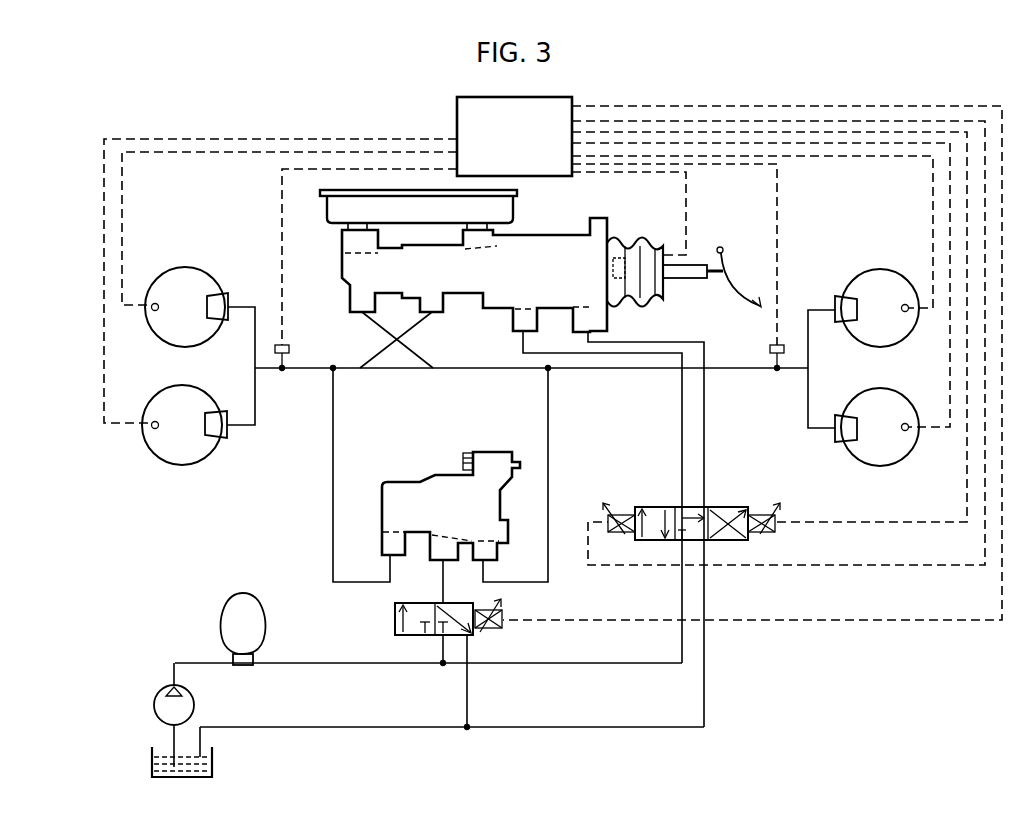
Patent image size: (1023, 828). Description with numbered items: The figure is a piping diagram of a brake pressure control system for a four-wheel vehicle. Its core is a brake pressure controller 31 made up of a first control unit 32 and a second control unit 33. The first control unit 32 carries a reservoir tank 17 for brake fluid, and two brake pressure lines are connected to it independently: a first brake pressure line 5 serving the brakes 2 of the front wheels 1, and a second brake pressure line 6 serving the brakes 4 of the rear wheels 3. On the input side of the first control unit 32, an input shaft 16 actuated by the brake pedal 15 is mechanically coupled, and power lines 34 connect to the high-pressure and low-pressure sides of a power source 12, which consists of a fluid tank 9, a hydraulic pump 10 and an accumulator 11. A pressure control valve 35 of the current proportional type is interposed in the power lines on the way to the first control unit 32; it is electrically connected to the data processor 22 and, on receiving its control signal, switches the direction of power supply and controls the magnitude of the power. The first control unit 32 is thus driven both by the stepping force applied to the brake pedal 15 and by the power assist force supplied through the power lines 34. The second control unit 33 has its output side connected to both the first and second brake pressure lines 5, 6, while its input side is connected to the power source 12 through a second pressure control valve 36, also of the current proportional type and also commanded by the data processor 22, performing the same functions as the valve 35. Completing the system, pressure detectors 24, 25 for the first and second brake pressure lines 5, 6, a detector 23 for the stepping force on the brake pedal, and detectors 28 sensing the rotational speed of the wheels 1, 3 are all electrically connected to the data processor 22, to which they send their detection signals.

The front wheels 1 is at (188, 282).
The brakes 2 is at (218, 298).
The rear wheels 3 is at (868, 287).
The brakes 4 is at (842, 298).
The first brake pressure line 5 is at (303, 372).
The second brake pressure line 6 is at (613, 370).
The fluid tank 9 is at (152, 762).
The hydraulic pump 10 is at (163, 716).
The accumulator 11 is at (228, 611).
The power source 12 is at (163, 658).
The brake pedal 15 is at (733, 297).
The input shaft 16 is at (695, 268).
The reservoir tank 17 is at (332, 207).
The data processor 22 is at (523, 147).
The detector 23 is at (627, 241).
The pressure detector 24 is at (287, 347).
The pressure detector 25 is at (771, 357).
The detectors 28 is at (155, 303).
The brake pressure controller 31 is at (482, 313).
The first control unit 32 is at (536, 289).
The second control unit 33 is at (468, 518).
The power lines 34 is at (588, 667).
The pressure control valve 35 is at (733, 505).
The pressure control valve 36 is at (393, 617).